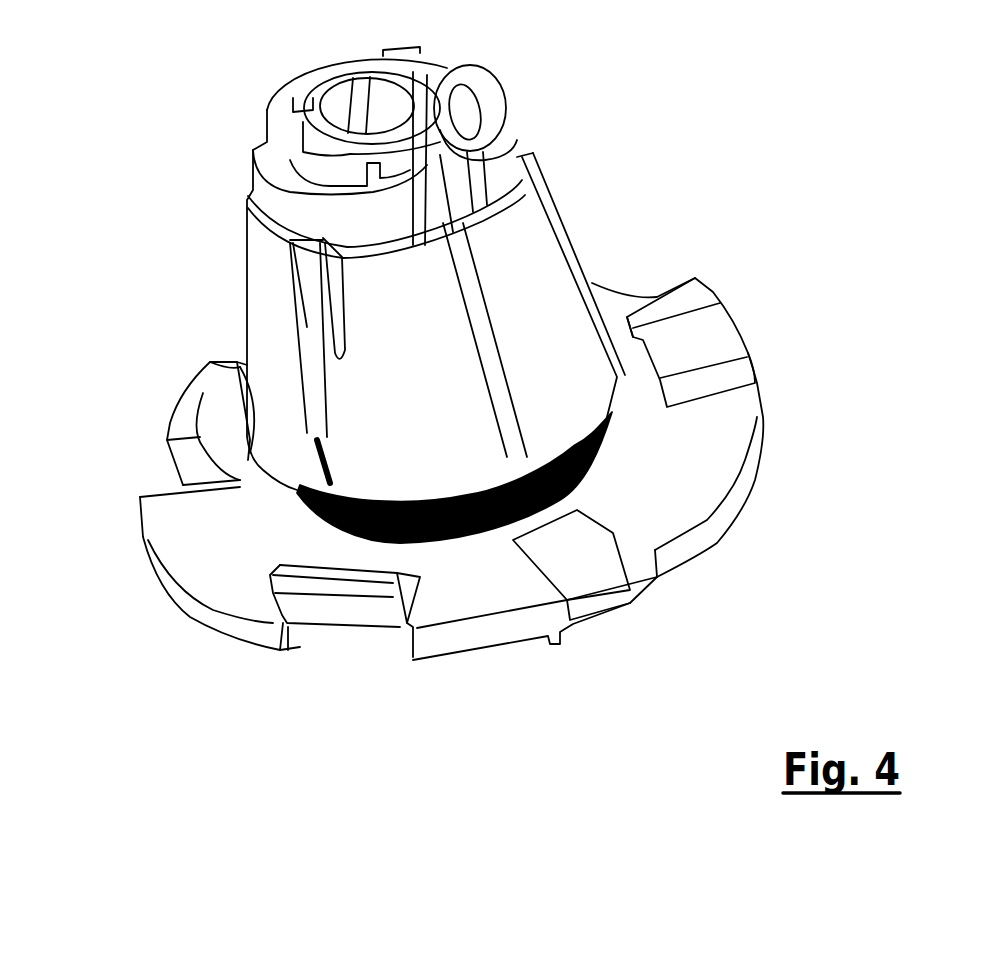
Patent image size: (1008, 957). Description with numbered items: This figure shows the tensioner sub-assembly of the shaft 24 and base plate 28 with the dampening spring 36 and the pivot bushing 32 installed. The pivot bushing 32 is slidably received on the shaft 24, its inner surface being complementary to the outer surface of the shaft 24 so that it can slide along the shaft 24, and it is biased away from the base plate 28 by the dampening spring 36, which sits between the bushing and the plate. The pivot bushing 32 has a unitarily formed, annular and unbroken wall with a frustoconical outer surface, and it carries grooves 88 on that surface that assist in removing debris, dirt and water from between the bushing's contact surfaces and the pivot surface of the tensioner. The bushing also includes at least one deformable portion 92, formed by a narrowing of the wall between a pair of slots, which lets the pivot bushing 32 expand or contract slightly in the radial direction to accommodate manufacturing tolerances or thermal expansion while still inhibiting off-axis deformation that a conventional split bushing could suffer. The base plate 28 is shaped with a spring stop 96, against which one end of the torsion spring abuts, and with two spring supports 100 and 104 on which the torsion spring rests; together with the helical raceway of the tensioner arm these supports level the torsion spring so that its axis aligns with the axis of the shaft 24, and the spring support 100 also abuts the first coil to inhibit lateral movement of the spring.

The shaft 24 is at (280, 108).
The base plate 28 is at (200, 567).
The pivot bushing 32 is at (247, 260).
The dampening spring 36 is at (597, 460).
The grooves 88 is at (473, 285).
The deformable portion 92 is at (335, 328).
The spring stop 96 is at (190, 398).
The spring support 100 is at (390, 590).
The spring support 104 is at (712, 292).